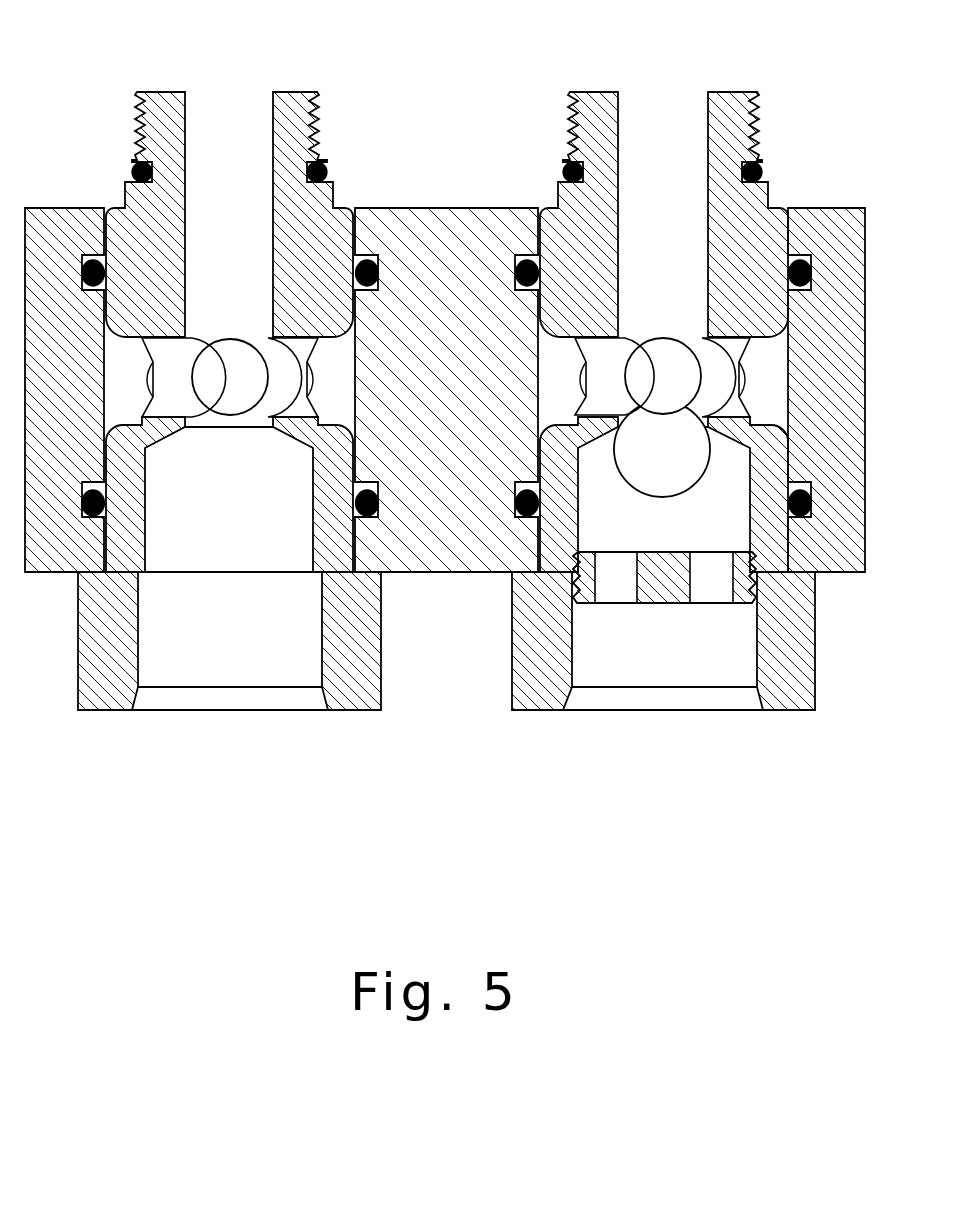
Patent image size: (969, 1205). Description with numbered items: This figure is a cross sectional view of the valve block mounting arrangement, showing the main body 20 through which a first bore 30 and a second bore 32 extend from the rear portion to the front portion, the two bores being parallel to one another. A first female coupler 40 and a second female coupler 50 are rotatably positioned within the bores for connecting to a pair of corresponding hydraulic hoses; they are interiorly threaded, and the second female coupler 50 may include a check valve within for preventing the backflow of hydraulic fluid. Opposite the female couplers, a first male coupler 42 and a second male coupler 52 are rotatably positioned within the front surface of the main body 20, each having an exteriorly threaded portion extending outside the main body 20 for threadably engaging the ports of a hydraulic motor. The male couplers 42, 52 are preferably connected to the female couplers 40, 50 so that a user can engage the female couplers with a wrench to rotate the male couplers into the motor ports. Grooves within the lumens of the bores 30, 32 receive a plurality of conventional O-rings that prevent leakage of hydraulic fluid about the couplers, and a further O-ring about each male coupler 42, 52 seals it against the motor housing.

The main body 20 is at (455, 540).
The first bore 30 is at (128, 358).
The second bore 32 is at (768, 370).
The first female coupler 40 is at (103, 687).
The first male coupler 42 is at (300, 103).
The second female coupler 50 is at (793, 698).
The second male coupler 52 is at (610, 105).